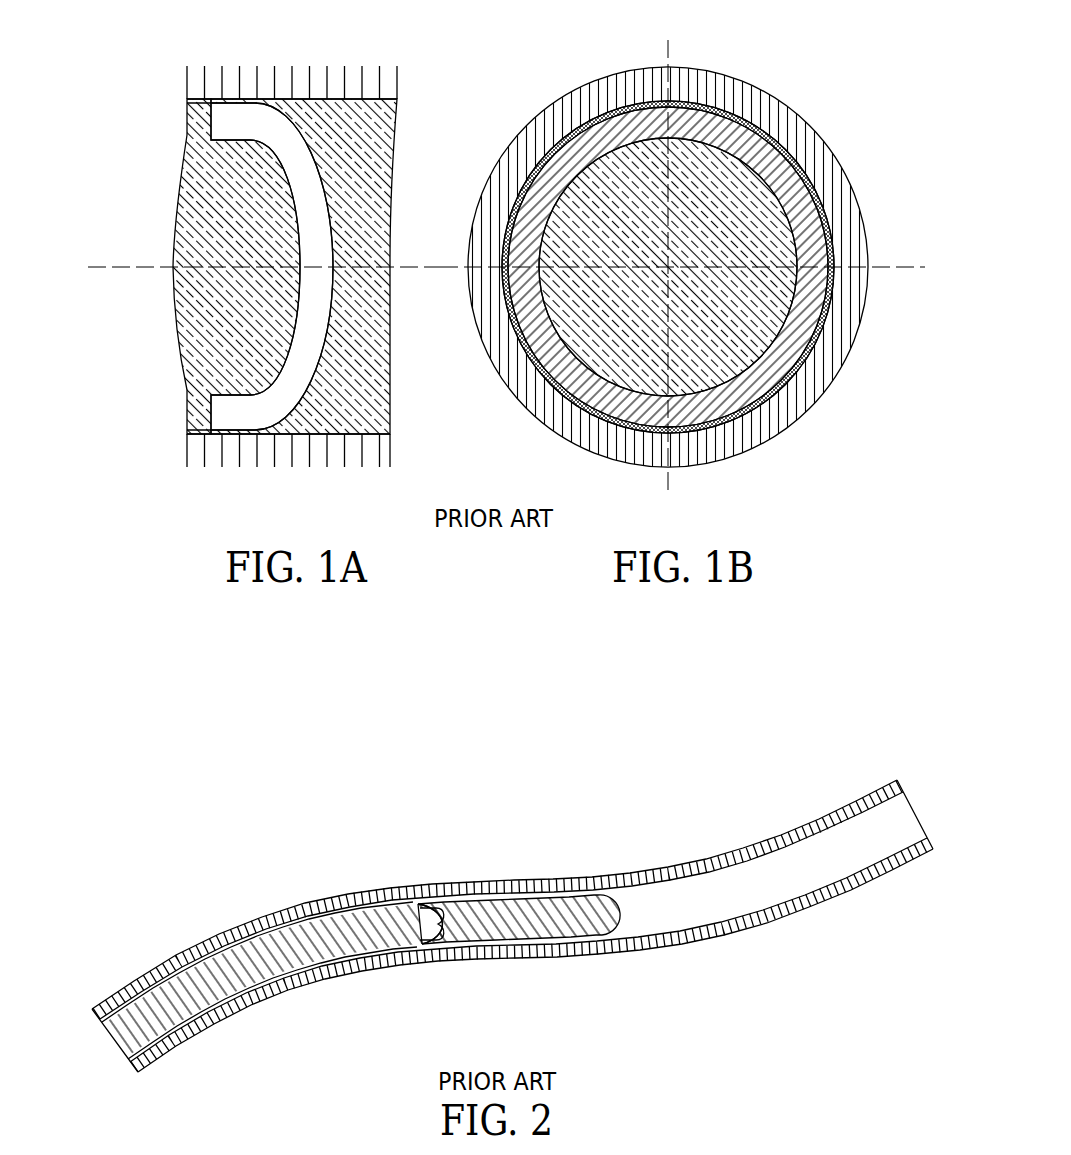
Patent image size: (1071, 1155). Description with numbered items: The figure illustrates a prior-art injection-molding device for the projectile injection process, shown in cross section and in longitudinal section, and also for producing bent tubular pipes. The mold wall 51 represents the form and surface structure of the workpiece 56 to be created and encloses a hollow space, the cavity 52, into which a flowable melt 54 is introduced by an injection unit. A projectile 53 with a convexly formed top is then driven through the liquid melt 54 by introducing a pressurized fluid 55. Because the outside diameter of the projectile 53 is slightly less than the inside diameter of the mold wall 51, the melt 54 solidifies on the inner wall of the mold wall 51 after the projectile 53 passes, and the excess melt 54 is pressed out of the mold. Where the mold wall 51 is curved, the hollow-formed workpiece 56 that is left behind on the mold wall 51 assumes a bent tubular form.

In FIG. 1A, the mold wall 51 is at (267, 70).
In FIG. 1B, the mold wall 51 is at (747, 98).
In FIG. 2, the mold wall 51 is at (512, 888).
In FIG. 2, the cavity 52 is at (682, 921).
In FIG. 1A, the projectile 53 is at (223, 415).
In FIG. 1B, the projectile 53 is at (803, 203).
In FIG. 2, the projectile 53 is at (442, 905).
In FIG. 1A, the melt 54 is at (383, 125).
In FIG. 2, the melt 54 is at (587, 923).
In FIG. 1A, the pressurized fluid 55 is at (198, 200).
In FIG. 1B, the pressurized fluid 55 is at (773, 268).
In FIG. 2, the pressurized fluid 55 is at (348, 943).
In FIG. 1A, the workpiece 56 is at (188, 101).
In FIG. 1B, the workpiece 56 is at (795, 373).
In FIG. 2, the workpiece 56 is at (262, 930).